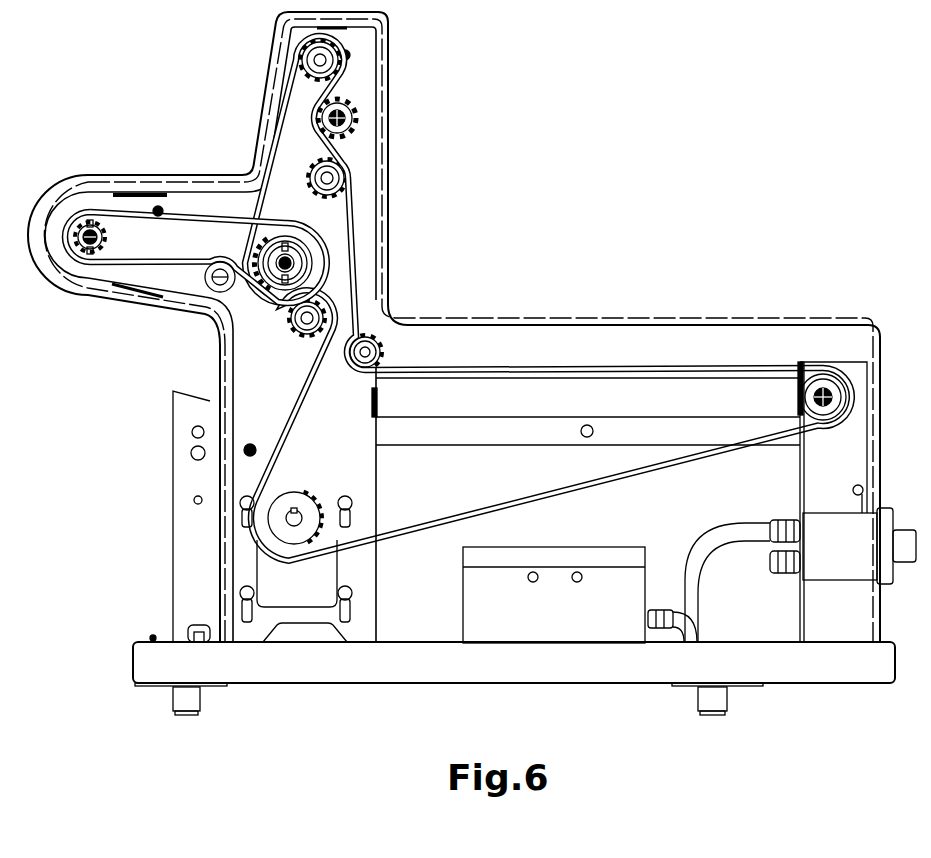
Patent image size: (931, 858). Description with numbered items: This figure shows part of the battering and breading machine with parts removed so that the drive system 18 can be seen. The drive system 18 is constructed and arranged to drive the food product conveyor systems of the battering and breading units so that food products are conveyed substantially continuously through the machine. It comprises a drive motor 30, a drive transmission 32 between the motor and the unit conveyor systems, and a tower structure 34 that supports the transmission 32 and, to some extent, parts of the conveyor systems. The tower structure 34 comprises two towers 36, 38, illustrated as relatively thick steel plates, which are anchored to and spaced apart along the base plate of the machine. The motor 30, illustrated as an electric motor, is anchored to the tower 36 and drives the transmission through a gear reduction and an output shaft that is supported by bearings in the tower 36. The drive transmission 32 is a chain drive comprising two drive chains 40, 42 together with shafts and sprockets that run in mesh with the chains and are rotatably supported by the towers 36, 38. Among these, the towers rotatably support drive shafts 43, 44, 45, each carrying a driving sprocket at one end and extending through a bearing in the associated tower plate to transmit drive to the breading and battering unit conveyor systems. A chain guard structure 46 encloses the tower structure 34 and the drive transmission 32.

The drive system 18 is at (392, 19).
The drive motor 30 is at (300, 580).
The drive transmission 32 is at (306, 509).
The tower structure 34 is at (370, 277).
The tower 36 is at (346, 446).
The tower 38 is at (858, 472).
The drive chain 40 is at (580, 487).
The drive chain 42 is at (123, 258).
The drive shaft 43 is at (348, 118).
The drive shaft 44 is at (84, 232).
The drive shaft 45 is at (823, 388).
The chain guard structure 46 is at (598, 324).